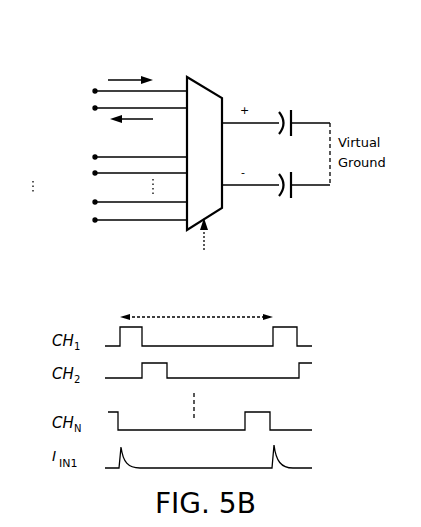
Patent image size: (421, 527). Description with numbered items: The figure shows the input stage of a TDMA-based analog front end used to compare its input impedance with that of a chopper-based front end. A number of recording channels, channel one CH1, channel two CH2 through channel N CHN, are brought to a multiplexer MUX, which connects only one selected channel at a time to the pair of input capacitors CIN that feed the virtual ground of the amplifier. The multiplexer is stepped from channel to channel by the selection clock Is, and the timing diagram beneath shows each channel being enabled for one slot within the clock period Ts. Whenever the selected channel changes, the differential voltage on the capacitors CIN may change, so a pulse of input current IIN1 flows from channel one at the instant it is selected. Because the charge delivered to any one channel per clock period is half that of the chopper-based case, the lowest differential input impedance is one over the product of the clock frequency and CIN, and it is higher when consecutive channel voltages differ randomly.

The channel 1 input CH1 is at (102, 99).
The channel 2 input CH2 is at (102, 163).
The channel N input CHN is at (102, 211).
The input current of channel 1 IIN1 is at (131, 98).
The multiplexer MUX is at (204, 153).
The channel selection clock Is is at (202, 247).
The input capacitor CIN is at (277, 155).
The clock period Ts is at (196, 305).